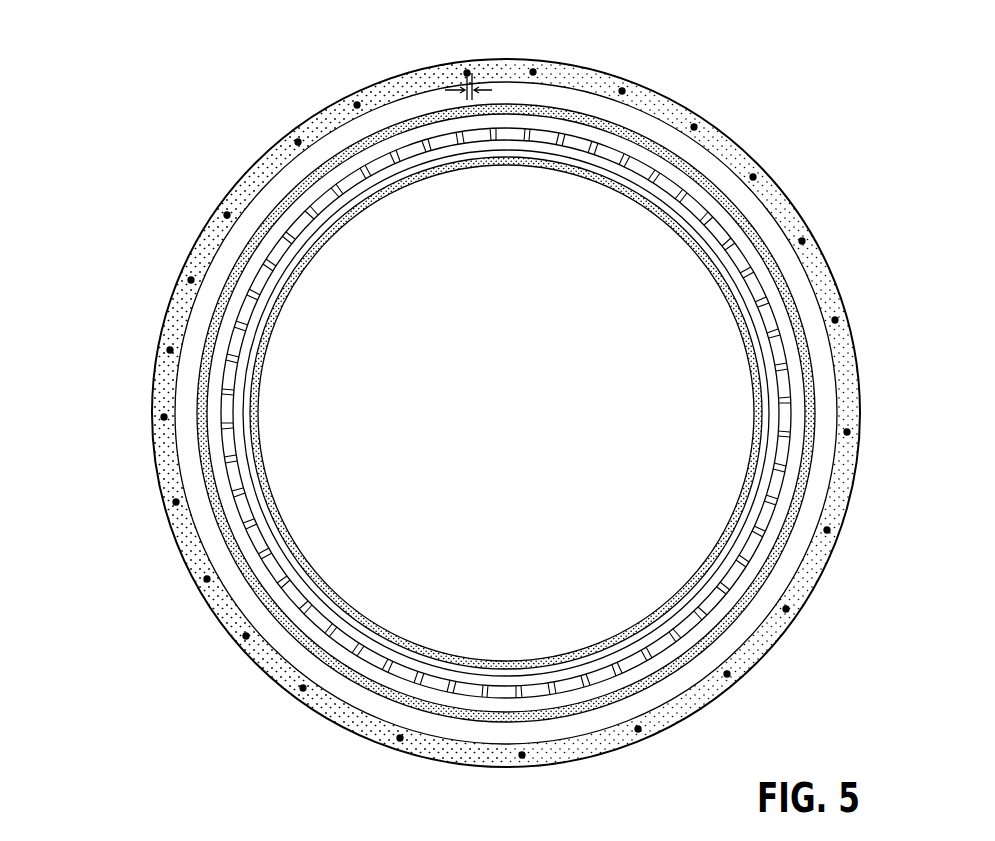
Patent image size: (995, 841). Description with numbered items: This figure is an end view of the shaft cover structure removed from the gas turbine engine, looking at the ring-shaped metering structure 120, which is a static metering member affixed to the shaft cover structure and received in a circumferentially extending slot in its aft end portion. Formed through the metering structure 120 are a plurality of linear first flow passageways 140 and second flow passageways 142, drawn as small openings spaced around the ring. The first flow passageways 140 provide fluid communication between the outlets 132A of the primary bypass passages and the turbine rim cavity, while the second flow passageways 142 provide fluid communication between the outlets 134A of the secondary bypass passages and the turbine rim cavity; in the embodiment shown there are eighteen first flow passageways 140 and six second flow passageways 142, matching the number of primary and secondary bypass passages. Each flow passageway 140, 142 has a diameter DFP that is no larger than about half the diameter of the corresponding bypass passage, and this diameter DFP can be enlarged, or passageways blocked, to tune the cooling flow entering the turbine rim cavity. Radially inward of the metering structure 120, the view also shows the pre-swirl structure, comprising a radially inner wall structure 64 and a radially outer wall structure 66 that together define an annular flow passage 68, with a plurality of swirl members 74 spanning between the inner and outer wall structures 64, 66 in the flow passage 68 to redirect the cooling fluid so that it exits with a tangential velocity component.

The radially inner wall structure 64 is at (242, 345).
The radially outer wall structure 66 is at (212, 396).
The annular flow passage 68 is at (300, 225).
The swirl members 74 is at (258, 280).
The metering structure 120 is at (313, 127).
The outlets of the primary bypass passages 132A is at (506, 56).
The outlets of the secondary bypass passages 134A is at (452, 62).
The first flow passageways 140 is at (357, 105).
The second flow passageways 142 is at (467, 73).
The diameter of flow passageway DFP is at (492, 90).